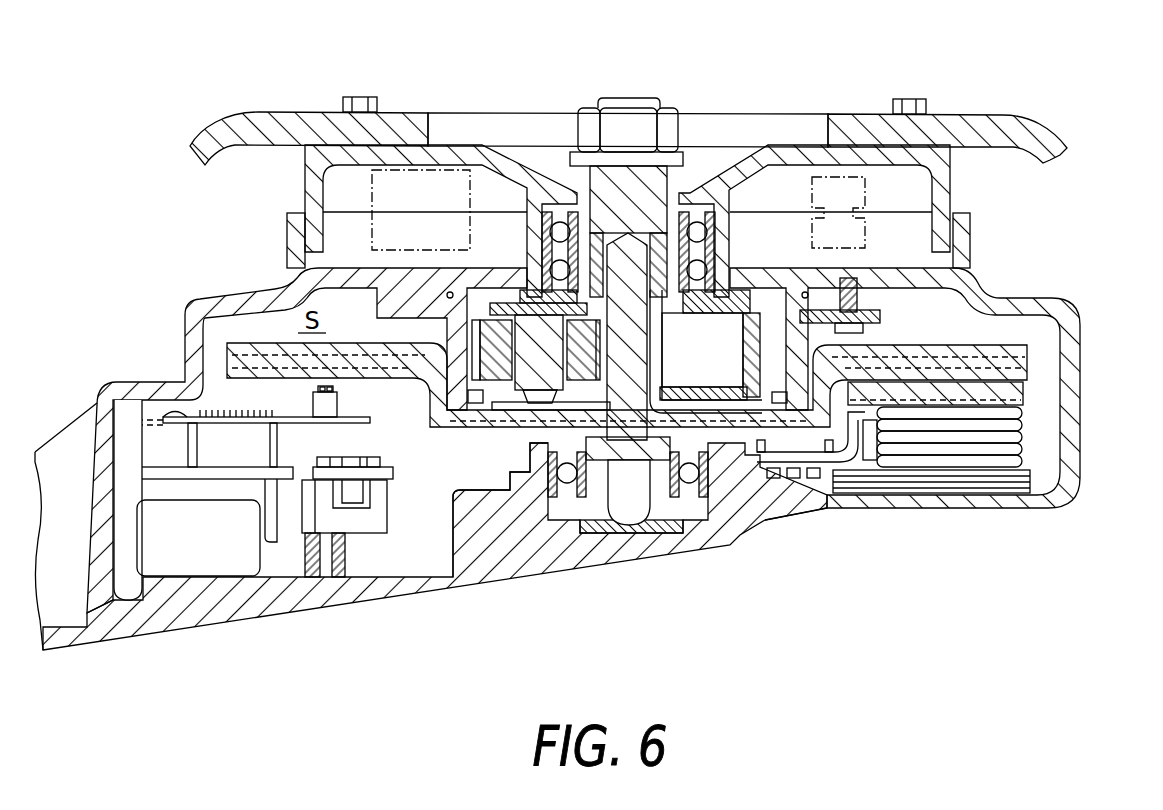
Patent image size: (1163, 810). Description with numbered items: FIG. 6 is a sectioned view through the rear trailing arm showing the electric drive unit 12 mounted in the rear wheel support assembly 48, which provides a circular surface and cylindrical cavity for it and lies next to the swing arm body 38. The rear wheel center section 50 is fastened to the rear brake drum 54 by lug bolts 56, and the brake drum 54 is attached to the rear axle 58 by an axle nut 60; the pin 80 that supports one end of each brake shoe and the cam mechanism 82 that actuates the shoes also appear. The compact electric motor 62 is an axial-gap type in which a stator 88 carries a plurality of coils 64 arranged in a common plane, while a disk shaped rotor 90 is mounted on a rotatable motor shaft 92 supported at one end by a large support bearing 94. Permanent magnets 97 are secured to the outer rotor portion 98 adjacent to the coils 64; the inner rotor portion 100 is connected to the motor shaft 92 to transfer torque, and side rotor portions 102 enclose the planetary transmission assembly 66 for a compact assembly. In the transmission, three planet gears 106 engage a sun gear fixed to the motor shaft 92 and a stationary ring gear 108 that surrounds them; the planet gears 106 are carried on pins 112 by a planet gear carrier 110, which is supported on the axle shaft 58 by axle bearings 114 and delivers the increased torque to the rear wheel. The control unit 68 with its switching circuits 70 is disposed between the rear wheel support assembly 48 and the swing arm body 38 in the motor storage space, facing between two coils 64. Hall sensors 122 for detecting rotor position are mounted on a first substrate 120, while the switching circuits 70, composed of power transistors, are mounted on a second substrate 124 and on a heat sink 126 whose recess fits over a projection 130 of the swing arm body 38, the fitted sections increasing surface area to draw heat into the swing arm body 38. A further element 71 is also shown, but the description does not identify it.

The electric drive unit 12 is at (859, 576).
The swing arm body 38 is at (112, 640).
The rear wheel support assembly 48 is at (733, 527).
The rear wheel center section 50 is at (990, 115).
The rear brake drum 54 is at (950, 180).
The lug bolts 56 is at (906, 98).
The rear axle 58 is at (628, 185).
The axle nut 60 is at (583, 110).
The compact electric motor 62 is at (1037, 369).
The coils 64 is at (1020, 437).
The planetary transmission assembly 66 is at (752, 247).
The control unit 68 is at (228, 511).
The switching circuits 70 is at (410, 541).
The connector 71 is at (367, 527).
The pin 80 is at (846, 177).
The cam mechanism 82 is at (372, 190).
The stator 88 is at (1037, 474).
The rotor 90 is at (929, 377).
The motor shaft 92 is at (652, 527).
The large support bearing 94 is at (568, 485).
The permanent magnets 97 is at (981, 378).
The outer rotor portion 98 is at (903, 346).
The inner rotor portion 100 is at (713, 428).
The side rotor portions 102 is at (424, 411).
The planet gears 106 is at (493, 365).
The stationary ring gear 108 is at (462, 310).
The planet gear carrier 110 is at (758, 325).
The pins 112 is at (537, 377).
The axle bearings 114 is at (699, 224).
The first substrate 120 is at (187, 378).
The hall sensors 122 is at (338, 403).
The second substrate 124 is at (293, 480).
The heat sink 126 is at (347, 562).
The projection 130 is at (325, 562).